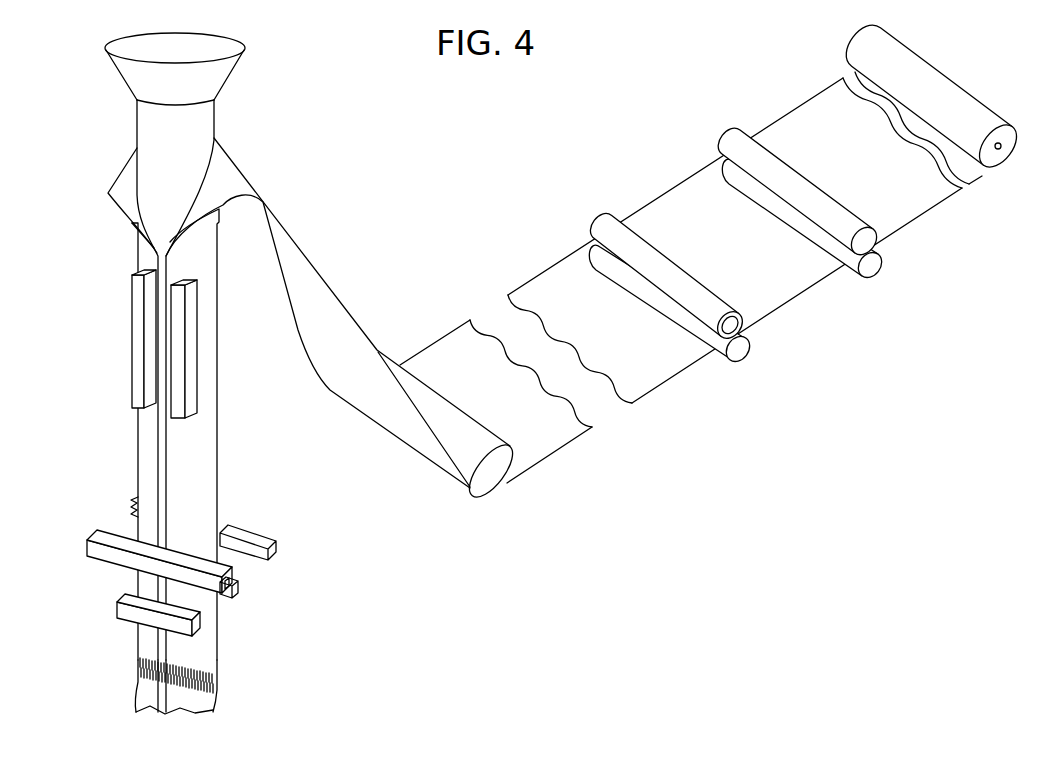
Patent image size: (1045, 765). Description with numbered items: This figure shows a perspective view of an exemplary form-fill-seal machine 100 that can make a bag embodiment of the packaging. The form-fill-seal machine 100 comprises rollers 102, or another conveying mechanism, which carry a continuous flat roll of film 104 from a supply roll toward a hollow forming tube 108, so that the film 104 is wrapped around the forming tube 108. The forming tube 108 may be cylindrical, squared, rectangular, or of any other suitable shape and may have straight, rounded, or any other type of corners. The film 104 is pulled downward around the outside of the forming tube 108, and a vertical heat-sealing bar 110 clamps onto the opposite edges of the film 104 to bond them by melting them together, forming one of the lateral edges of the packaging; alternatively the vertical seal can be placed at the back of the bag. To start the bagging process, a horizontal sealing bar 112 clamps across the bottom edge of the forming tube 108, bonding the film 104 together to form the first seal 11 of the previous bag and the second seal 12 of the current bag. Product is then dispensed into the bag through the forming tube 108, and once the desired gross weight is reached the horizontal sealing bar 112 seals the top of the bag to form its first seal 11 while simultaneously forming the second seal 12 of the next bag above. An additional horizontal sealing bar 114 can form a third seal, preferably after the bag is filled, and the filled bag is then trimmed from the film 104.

The form-fill-seal machine 100 is at (889, 422).
The rollers 102 is at (593, 214).
The film 104 is at (778, 280).
The forming tube 108 is at (158, 128).
The vertical heat-sealing bar 110 is at (131, 345).
The horizontal sealing bar 112 is at (83, 545).
The additional horizontal sealing bar 114 is at (112, 608).
The second seal 12 is at (219, 680).
The first seal 11 is at (218, 699).